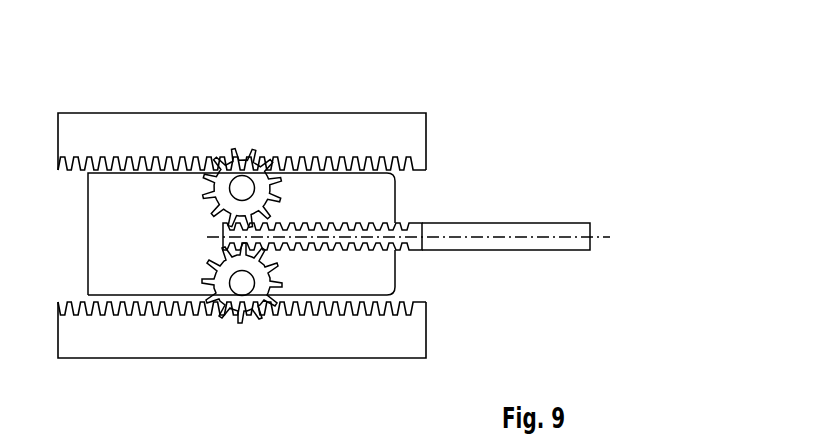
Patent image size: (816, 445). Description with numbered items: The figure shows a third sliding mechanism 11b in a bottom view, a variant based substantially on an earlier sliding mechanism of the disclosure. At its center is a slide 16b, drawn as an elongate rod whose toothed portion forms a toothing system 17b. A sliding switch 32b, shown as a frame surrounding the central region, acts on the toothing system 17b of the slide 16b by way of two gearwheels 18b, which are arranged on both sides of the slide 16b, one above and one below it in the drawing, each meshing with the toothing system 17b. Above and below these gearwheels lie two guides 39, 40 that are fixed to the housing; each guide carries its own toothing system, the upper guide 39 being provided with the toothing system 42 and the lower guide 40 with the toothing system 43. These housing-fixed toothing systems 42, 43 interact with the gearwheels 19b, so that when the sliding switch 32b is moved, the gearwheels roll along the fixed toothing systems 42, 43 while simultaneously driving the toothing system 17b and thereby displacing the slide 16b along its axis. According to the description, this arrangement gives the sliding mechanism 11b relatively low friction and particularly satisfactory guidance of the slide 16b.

The sliding mechanism 11b is at (239, 223).
The guide 39 is at (239, 143).
The guide 40 is at (239, 332).
The toothing system 42 is at (62, 171).
The toothing system 43 is at (61, 302).
The sliding switch 32b is at (400, 190).
The slide 16b is at (408, 216).
The toothing system 17b is at (416, 222).
The gearwheel 18b is at (235, 237).
The gearwheel 19b is at (230, 166).